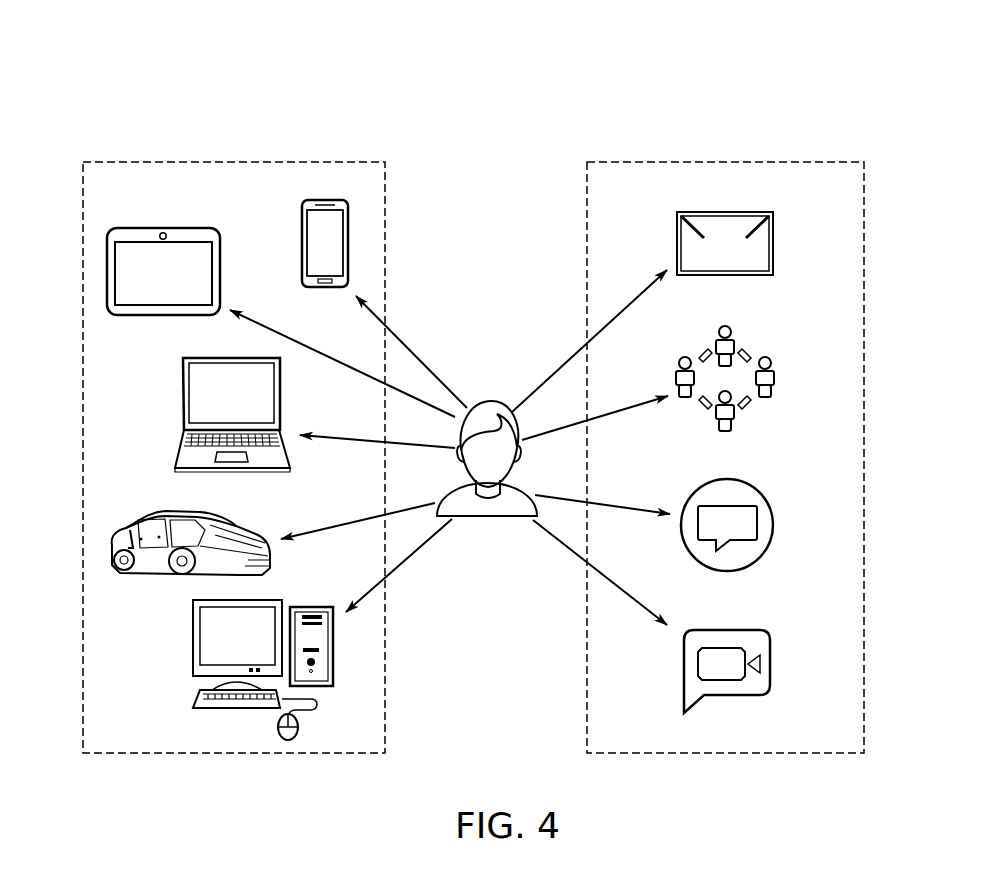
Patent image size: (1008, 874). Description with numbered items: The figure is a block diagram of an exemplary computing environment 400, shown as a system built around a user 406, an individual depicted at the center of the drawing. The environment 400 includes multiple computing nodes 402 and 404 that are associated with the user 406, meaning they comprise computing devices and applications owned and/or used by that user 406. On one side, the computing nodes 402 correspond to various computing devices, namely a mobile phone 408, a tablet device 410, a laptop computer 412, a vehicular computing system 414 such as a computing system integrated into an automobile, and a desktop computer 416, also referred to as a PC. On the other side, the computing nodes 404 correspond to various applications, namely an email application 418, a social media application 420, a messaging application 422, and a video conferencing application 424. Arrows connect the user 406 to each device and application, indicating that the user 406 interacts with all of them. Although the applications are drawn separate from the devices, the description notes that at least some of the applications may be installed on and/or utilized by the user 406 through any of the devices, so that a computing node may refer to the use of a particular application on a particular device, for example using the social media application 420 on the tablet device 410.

The computing environment 400 is at (145, 62).
The computing nodes 402 is at (233, 160).
The computing nodes 404 is at (723, 160).
The user 406 is at (489, 400).
The mobile phone 408 is at (350, 238).
The tablet device 410 is at (107, 271).
The laptop computer 412 is at (183, 393).
The vehicular computing system 414 is at (113, 542).
The desktop computer 416 is at (193, 632).
The email application 418 is at (775, 247).
The social media application 420 is at (775, 377).
The messaging application 422 is at (773, 522).
The video conferencing application 424 is at (772, 661).